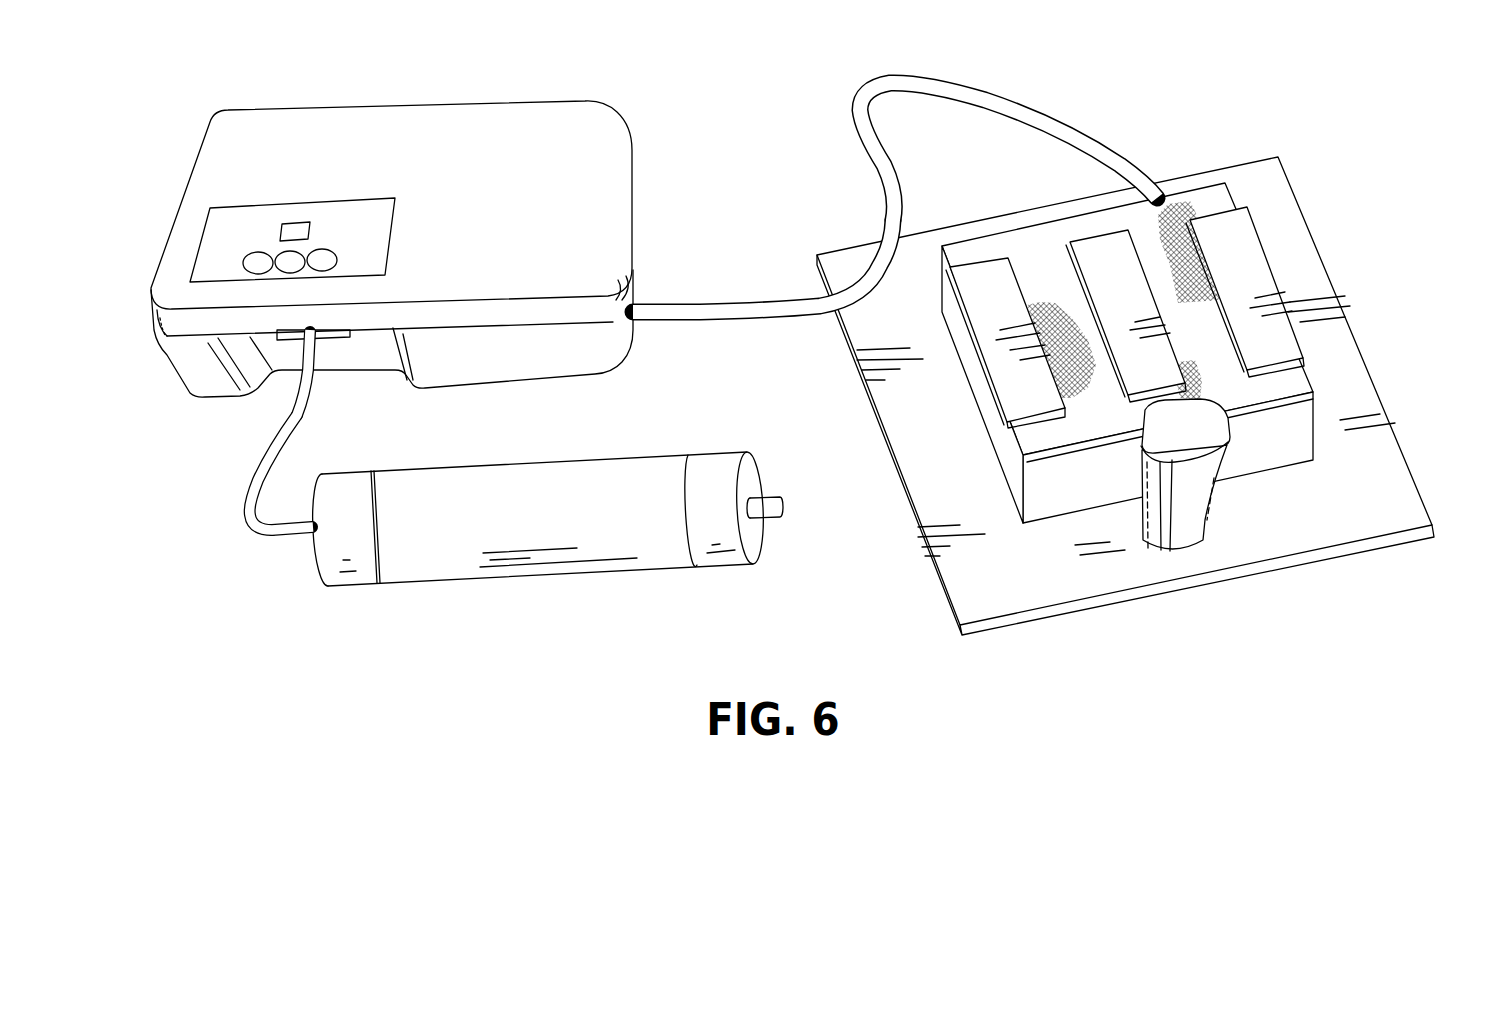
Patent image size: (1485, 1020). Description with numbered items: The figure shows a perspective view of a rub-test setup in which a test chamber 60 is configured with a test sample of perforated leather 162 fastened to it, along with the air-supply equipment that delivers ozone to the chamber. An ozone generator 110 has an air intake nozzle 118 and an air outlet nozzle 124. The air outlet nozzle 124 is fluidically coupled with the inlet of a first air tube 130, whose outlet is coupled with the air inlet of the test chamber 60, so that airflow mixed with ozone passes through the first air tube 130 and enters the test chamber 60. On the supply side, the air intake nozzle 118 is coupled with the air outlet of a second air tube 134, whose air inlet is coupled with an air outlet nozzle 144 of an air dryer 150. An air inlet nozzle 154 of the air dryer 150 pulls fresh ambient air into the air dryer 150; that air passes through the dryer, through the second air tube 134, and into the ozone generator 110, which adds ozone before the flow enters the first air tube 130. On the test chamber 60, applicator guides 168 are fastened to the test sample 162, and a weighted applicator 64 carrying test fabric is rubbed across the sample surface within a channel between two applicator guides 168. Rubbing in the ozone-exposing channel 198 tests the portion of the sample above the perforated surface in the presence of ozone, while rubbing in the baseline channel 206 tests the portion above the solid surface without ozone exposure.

The test chamber 60 is at (1331, 225).
The weighted applicator 64 is at (1108, 558).
The ozone generator 110 is at (252, 128).
The air intake nozzle 118 is at (317, 349).
The air outlet nozzle 124 is at (650, 323).
The first air tube 130 is at (858, 88).
The second air tube 134 is at (256, 488).
The air outlet nozzle of air dryer 144 is at (302, 537).
The air dryer 150 is at (418, 556).
The air inlet nozzle 154 is at (768, 512).
The test sample of perforated leather 162 is at (1295, 383).
The applicator guides 168 is at (982, 278).
The ozone-exposing channel 198 is at (1165, 274).
The baseline channel 206 is at (1057, 273).